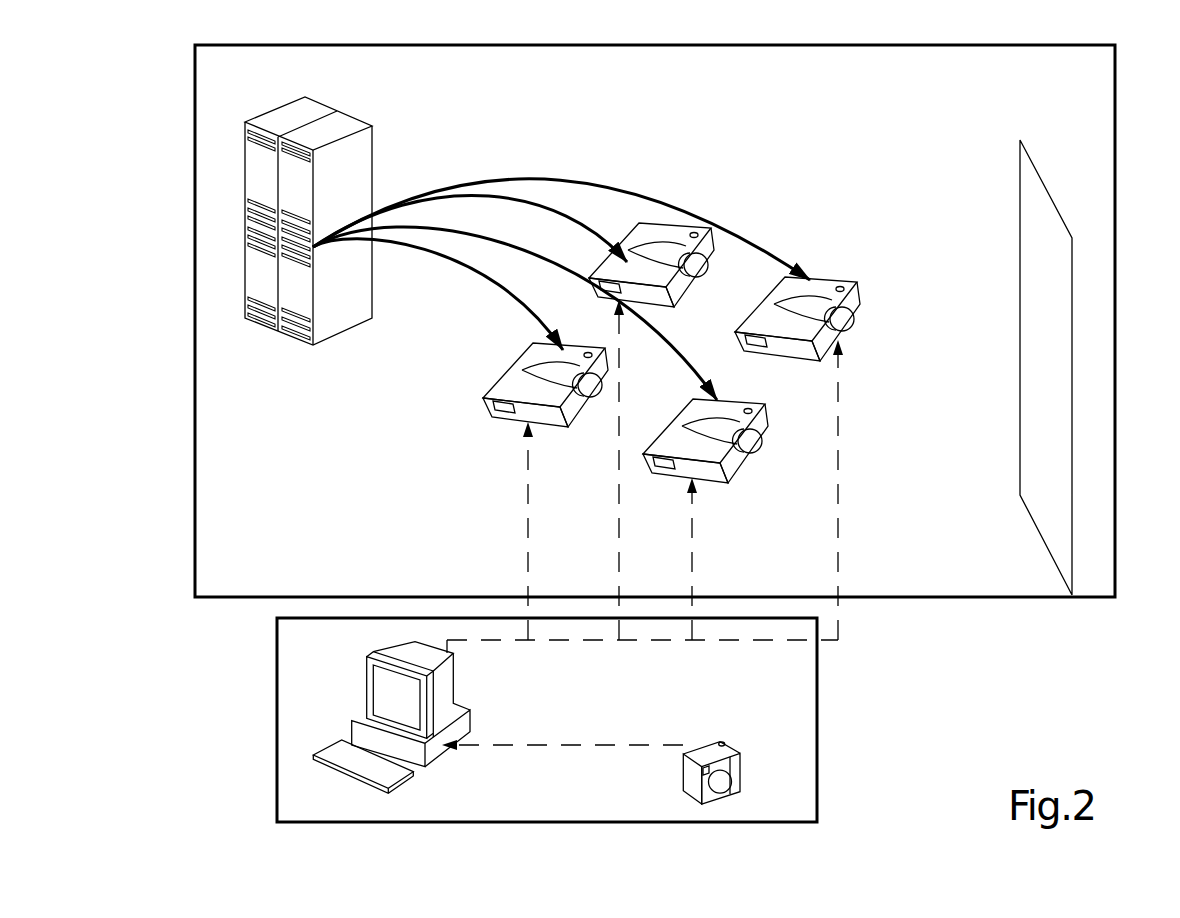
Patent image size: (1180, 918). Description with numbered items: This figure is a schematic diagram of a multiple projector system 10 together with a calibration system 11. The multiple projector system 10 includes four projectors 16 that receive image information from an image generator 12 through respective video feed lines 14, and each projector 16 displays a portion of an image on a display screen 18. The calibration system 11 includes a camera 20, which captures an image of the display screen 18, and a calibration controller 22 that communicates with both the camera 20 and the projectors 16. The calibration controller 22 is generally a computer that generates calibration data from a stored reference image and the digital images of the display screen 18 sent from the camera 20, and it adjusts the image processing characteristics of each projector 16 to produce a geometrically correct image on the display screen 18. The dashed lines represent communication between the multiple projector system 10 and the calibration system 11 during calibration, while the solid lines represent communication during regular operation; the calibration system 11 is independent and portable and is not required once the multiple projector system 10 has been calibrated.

The multiple projector system 10 is at (1119, 119).
The calibration system 11 is at (275, 750).
The image generator 12 is at (250, 275).
The video feed lines 14 is at (657, 193).
The projectors 16 is at (503, 389).
The display screen 18 is at (1035, 240).
The camera 20 is at (740, 765).
The calibration controller 22 is at (383, 686).